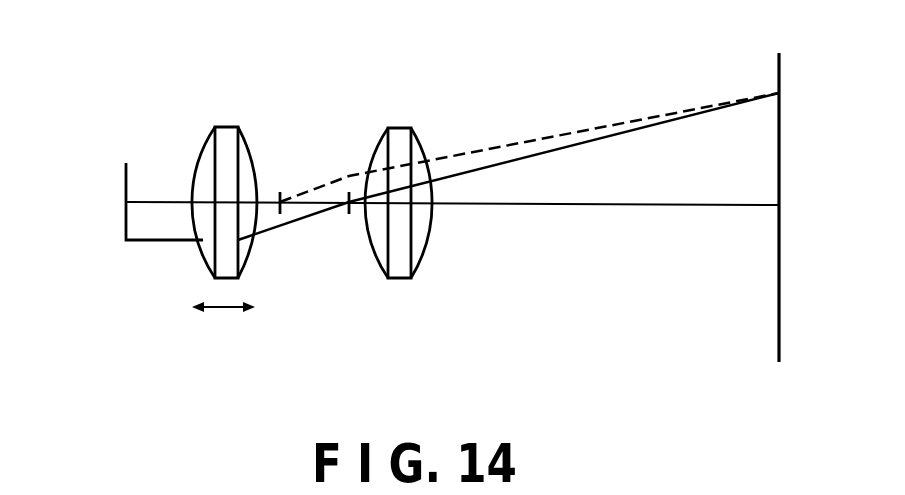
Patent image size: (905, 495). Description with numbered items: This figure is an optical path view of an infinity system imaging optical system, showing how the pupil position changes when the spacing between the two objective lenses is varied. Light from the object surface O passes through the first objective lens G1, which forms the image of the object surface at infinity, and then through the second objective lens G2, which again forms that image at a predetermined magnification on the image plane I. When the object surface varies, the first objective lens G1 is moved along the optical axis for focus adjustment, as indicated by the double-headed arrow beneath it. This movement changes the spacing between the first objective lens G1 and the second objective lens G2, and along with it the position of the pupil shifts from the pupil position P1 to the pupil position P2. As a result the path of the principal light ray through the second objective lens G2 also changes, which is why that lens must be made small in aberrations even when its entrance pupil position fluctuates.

The object surface O is at (127, 162).
The first objective lens G1 is at (225, 127).
The second objective lens G2 is at (398, 128).
The pupil position P1 is at (286, 183).
The pupil position P2 is at (349, 223).
The image plane I is at (777, 68).